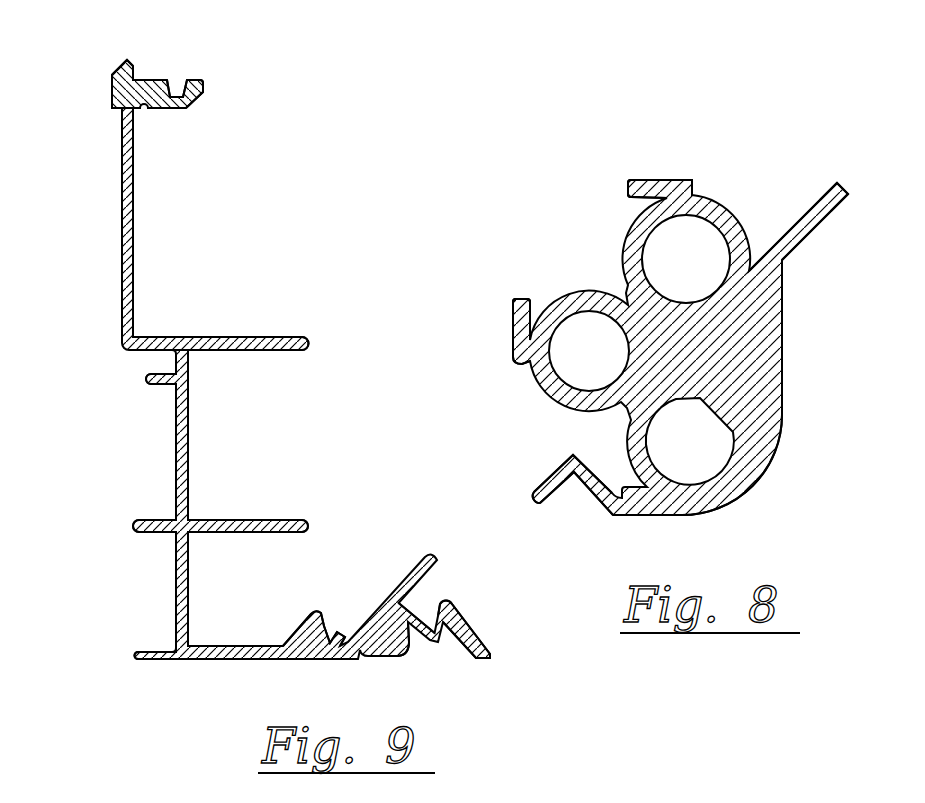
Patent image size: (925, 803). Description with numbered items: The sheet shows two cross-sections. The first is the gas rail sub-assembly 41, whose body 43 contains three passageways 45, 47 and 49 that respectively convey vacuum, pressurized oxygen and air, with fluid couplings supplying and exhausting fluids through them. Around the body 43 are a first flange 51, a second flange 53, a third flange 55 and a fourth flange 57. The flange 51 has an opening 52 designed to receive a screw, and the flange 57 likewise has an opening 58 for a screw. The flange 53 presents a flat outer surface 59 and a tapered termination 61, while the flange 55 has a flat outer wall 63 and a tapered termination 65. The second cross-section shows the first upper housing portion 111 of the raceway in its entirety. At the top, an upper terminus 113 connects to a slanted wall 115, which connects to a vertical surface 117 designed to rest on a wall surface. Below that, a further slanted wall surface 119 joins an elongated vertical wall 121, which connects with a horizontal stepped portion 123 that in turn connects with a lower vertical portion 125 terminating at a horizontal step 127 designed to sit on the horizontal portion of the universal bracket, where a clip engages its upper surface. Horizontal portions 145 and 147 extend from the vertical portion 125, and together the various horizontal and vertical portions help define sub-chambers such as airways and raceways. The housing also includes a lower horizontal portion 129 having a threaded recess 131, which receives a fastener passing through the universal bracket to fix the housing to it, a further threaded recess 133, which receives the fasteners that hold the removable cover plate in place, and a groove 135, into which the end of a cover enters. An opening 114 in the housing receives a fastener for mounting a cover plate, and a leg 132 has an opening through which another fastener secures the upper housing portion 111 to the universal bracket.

In FIG. 9, the first upper housing portion 111 is at (125, 452).
In FIG. 9, the upper terminus 113 is at (129, 62).
In FIG. 9, the opening 114 is at (176, 78).
In FIG. 9, the slanted wall 115 is at (119, 72).
In FIG. 9, the vertical surface 117 is at (112, 90).
In FIG. 9, the slanted wall surface 119 is at (117, 110).
In FIG. 9, the elongated vertical wall 121 is at (122, 218).
In FIG. 9, the horizontal stepped portion 123 is at (220, 337).
In FIG. 9, the lower vertical portion 125 is at (175, 418).
In FIG. 9, the horizontal step 127 is at (157, 663).
In FIG. 9, the lower horizontal portion 129 is at (310, 655).
In FIG. 9, the threaded recess 131 is at (405, 650).
In FIG. 9, the leg 132 is at (478, 640).
In FIG. 9, the threaded recess 133 is at (333, 620).
In FIG. 9, the groove 135 is at (418, 607).
In FIG. 9, the horizontal portion 145 is at (160, 378).
In FIG. 9, the horizontal portion 147 is at (165, 520).
In FIG. 8, the gas rail sub-assembly 41 is at (778, 480).
In FIG. 8, the body 43 is at (783, 362).
In FIG. 8, the passageway 45 is at (704, 274).
In FIG. 8, the passageway 47 is at (608, 365).
In FIG. 8, the passageway 49 is at (708, 455).
In FIG. 8, the first flange 51 is at (533, 500).
In FIG. 8, the opening 52 is at (540, 482).
In FIG. 8, the second flange 53 is at (513, 318).
In FIG. 8, the third flange 55 is at (680, 180).
In FIG. 8, the fourth flange 57 is at (793, 255).
In FIG. 8, the opening 58 is at (825, 205).
In FIG. 8, the flat outer surface 59 is at (515, 352).
In FIG. 8, the tapered termination 61 is at (525, 297).
In FIG. 8, the flat outer wall 63 is at (640, 180).
In FIG. 8, the tapered termination 65 is at (627, 192).